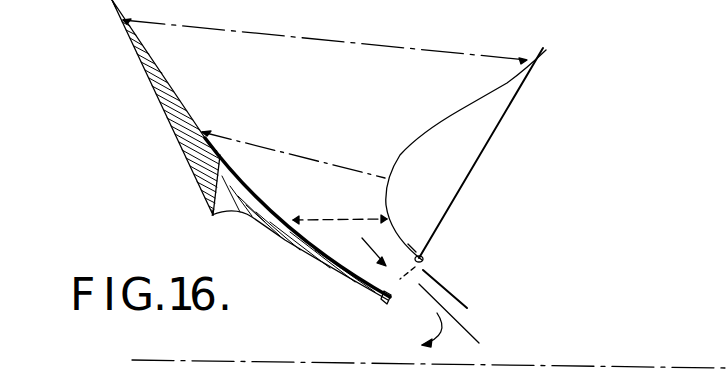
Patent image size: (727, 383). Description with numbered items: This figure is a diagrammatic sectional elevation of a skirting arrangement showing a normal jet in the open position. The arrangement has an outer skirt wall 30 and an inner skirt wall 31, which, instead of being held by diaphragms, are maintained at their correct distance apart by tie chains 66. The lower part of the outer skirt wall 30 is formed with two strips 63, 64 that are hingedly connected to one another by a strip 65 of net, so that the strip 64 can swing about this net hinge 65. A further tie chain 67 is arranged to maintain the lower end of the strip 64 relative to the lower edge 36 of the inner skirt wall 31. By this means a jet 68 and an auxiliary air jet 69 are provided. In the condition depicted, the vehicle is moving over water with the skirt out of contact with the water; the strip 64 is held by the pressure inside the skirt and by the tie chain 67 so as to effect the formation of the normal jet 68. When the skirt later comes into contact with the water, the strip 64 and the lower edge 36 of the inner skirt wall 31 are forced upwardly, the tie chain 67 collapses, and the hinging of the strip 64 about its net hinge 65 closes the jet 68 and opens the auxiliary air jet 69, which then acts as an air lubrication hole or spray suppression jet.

The outer skirt wall 30 is at (112, 4).
The inner skirt wall 31 is at (475, 100).
The lower edge 36 is at (450, 293).
The strip 63 is at (188, 158).
The strip 64 is at (315, 253).
The strip of net 65 is at (225, 185).
The tie chains 66 is at (373, 45).
The tie chain 67 is at (405, 276).
The jet 68 is at (469, 326).
The auxiliary air jet 69 is at (211, 211).